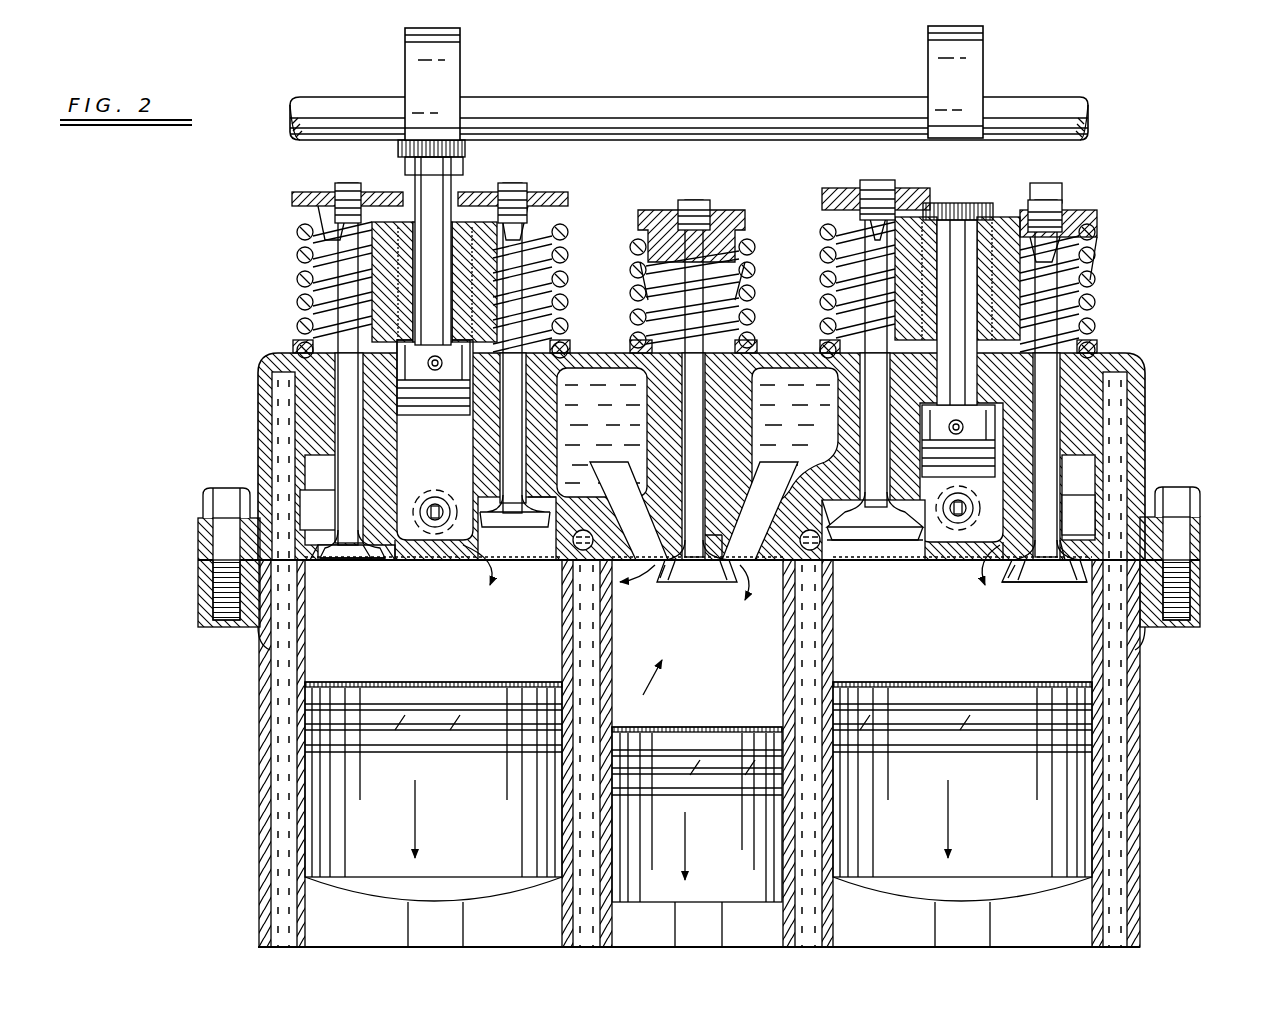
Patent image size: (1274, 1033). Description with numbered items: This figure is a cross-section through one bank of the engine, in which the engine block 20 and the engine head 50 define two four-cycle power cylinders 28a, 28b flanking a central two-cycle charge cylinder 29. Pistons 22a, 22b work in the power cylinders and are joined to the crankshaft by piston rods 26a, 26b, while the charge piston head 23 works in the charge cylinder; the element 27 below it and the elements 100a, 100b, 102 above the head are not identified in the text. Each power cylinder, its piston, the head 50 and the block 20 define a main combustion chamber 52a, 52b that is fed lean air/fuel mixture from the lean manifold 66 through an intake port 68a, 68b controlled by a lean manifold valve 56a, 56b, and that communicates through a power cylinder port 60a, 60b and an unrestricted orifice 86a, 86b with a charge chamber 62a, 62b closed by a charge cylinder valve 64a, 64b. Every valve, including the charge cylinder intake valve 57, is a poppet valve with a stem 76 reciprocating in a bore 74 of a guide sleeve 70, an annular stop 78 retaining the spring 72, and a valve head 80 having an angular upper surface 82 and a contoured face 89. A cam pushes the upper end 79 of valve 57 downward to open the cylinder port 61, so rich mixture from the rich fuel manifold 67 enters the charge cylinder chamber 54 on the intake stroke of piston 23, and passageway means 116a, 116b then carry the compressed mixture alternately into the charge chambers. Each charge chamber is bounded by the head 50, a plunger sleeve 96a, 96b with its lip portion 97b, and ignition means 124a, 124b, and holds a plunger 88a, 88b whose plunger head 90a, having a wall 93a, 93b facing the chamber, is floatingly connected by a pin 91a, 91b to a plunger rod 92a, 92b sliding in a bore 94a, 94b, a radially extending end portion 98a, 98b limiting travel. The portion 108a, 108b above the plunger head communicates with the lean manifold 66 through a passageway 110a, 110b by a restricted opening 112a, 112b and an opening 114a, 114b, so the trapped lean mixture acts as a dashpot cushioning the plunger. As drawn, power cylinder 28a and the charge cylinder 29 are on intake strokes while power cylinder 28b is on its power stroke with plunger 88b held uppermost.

The engine block 20 is at (1148, 592).
The piston 22a is at (1072, 808).
The piston 22b is at (458, 692).
The charge piston head 23 is at (692, 735).
The connecting rod 26a is at (985, 920).
The piston rod 26b is at (410, 922).
The connecting rod 27 is at (712, 922).
The power cylinder 28a is at (1090, 660).
The power cylinder 28b is at (318, 662).
The charge cylinder 29 is at (641, 685).
The engine head 50 is at (1175, 526).
The main combustion chamber 52a is at (938, 673).
The main combustion chamber 52b is at (408, 666).
The charge cylinder chamber 54 is at (697, 643).
The lean manifold valve 56a is at (1085, 605).
The lean manifold valve 56b is at (362, 555).
The charge cylinder intake valve 57 is at (702, 425).
The power cylinder port 60a is at (830, 598).
The power cylinder port 60b is at (545, 570).
The cylinder port 61 is at (655, 578).
The charge chamber 62a is at (905, 548).
The charge chamber 62b is at (448, 445).
The charge cylinder valve 64a is at (846, 588).
The charge cylinder valve 64b is at (513, 548).
The lean manifold 66 is at (372, 558).
The rich fuel manifold 67 is at (718, 556).
The intake port 68a is at (985, 618).
The port 68b is at (418, 603).
The sleeve 70 is at (710, 352).
The spring 72 is at (745, 282).
The bore 74 is at (690, 383).
The stem 76 is at (340, 302).
The annular stop 78 is at (735, 218).
The upper end 79 is at (695, 205).
The valve head 80 is at (696, 580).
The angular upper surface 82 is at (1195, 556).
The flow arrow 86a is at (925, 552).
The unrestricted orifice 86b is at (462, 548).
The plunger 88a is at (955, 210).
The plunger 88b is at (462, 170).
The face 89 is at (1010, 605).
The plunger head 90a is at (942, 420).
The pin 91a is at (958, 470).
The pivot 91b is at (445, 488).
The plunger rod 92a is at (1062, 268).
The push rod cap 92b is at (418, 172).
The wall 93a is at (1000, 505).
The coolant passage 93b is at (458, 417).
The bore 94a is at (985, 292).
The push rod housing 94b is at (495, 283).
The plunger sleeve 96a is at (1063, 290).
The sleeve 96b is at (498, 310).
The valve keeper 97b is at (365, 238).
The end portion 98a is at (968, 210).
The rocker arm 98b is at (470, 150).
The rocker post 100a is at (972, 58).
The rocker post 100b is at (410, 80).
The rocker shaft 102 is at (1057, 104).
The portion 108a is at (832, 340).
The spring seat 108b is at (558, 345).
The passageway 110a is at (1108, 428).
The head wall 110b is at (300, 350).
The opening 112a is at (1065, 348).
The push rod bore 112b is at (458, 286).
The opening 114a is at (1065, 475).
The passage 114b is at (342, 463).
The passageway means 116a is at (797, 500).
The passageway means 116b is at (577, 500).
The ignition means 124a is at (985, 548).
The swirl element 124b is at (453, 476).